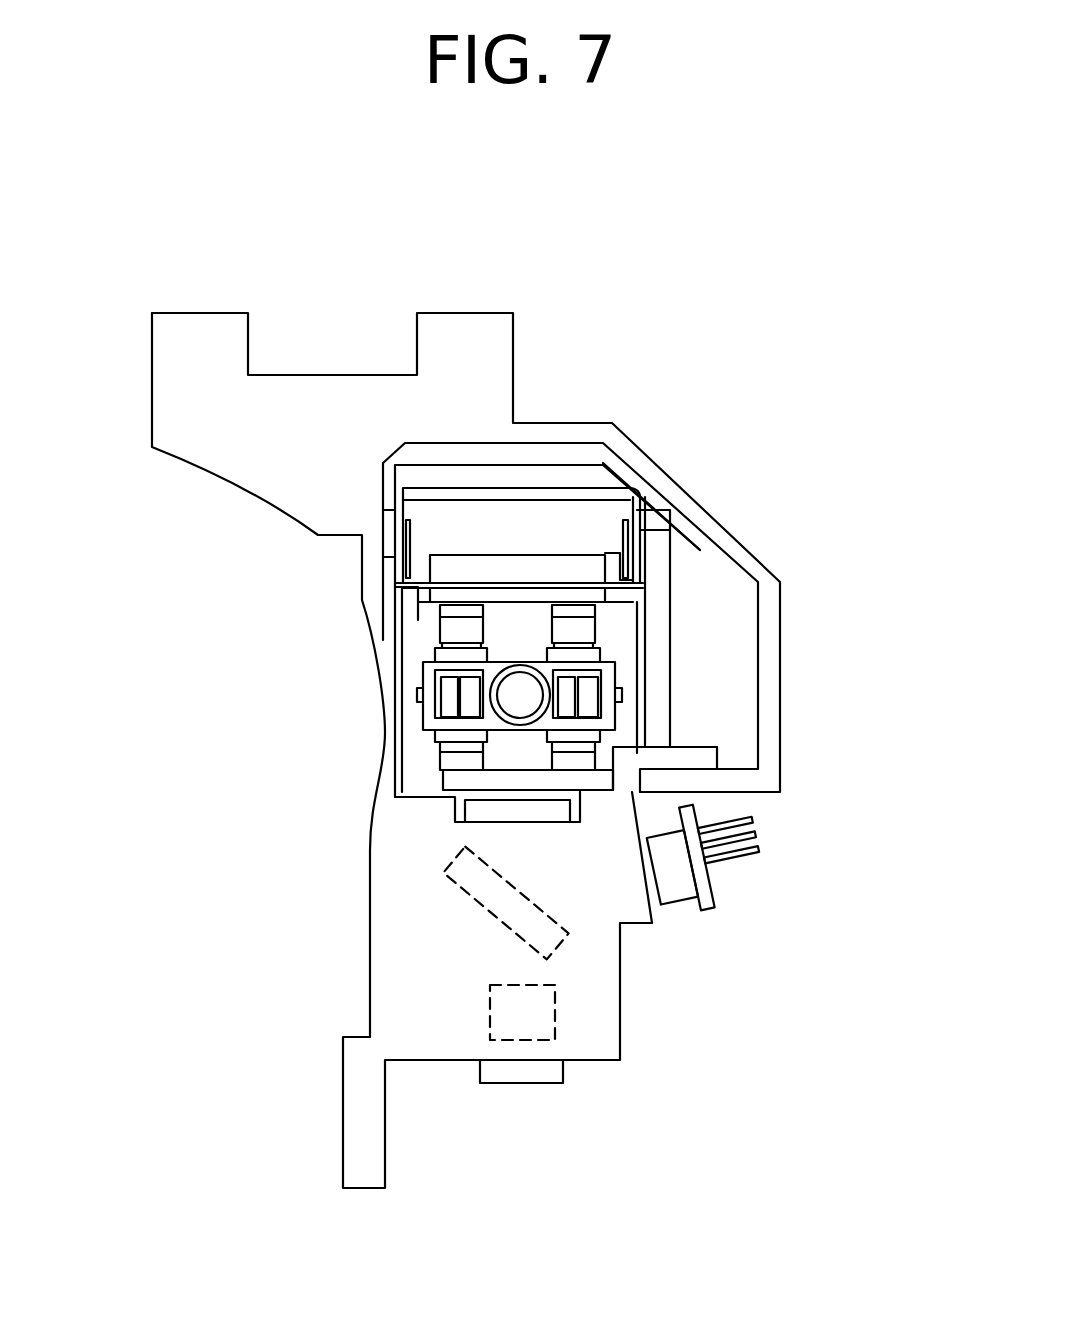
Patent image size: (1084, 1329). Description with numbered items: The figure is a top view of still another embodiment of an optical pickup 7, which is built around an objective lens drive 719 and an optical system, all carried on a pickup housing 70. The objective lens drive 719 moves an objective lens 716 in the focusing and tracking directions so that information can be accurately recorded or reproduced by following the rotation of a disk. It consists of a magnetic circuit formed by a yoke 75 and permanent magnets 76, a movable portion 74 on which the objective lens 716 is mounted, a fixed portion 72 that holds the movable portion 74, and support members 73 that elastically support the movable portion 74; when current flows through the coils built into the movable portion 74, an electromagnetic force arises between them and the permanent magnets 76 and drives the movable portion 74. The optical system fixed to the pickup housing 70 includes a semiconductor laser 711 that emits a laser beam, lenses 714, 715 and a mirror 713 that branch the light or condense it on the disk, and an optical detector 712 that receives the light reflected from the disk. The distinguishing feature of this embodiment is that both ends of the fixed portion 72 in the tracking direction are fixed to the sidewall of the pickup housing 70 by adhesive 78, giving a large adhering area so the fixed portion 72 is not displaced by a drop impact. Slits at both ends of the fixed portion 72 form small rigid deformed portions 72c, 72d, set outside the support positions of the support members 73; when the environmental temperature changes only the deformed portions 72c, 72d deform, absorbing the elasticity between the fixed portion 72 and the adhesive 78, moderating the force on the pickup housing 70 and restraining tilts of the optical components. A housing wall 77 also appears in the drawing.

The optical pickup 7 is at (122, 266).
The pickup housing 70 is at (383, 412).
The fixed portion 72 is at (528, 517).
The deformed portion 72c is at (395, 558).
The deformed portion 72d is at (733, 558).
The support member 73 is at (450, 630).
The movable portion 74 is at (618, 663).
The yoke 75 is at (640, 780).
The permanent magnet 76 is at (598, 628).
The housing 77 is at (607, 493).
The adhesive 78 is at (392, 525).
The semiconductor laser 711 is at (668, 882).
The optical detector 712 is at (533, 1075).
The mirror 713 is at (493, 890).
The lens 714 is at (530, 1017).
The lens 715 is at (483, 812).
The objective lens 716 is at (512, 698).
The objective lens drive 719 is at (595, 705).